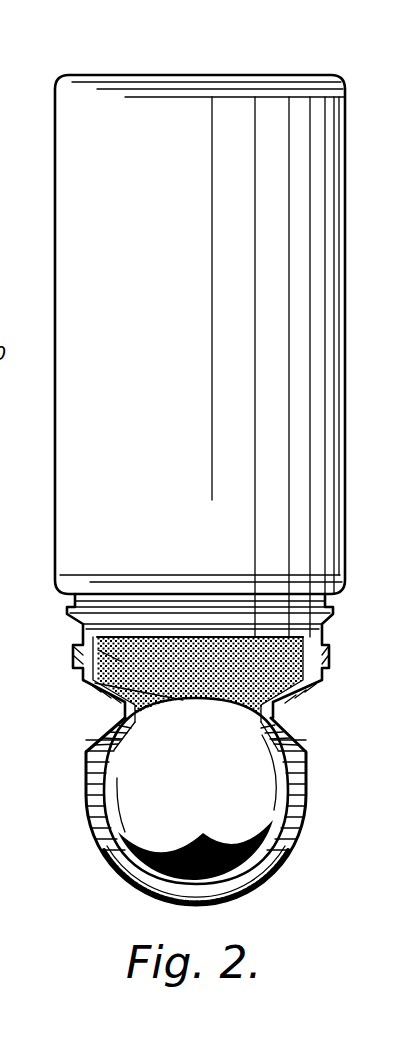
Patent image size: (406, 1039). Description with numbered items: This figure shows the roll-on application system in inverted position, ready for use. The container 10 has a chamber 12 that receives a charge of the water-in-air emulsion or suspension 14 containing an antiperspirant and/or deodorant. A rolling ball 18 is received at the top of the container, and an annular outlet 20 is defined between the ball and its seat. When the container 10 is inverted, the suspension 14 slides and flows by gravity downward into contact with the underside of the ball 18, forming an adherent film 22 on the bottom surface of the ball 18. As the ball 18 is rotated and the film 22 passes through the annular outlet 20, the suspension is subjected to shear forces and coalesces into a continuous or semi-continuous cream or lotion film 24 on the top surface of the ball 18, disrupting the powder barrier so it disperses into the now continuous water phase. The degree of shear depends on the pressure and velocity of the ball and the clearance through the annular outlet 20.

The container 10 is at (247, 75).
The chamber 12 is at (142, 336).
The charge of suspension 14 is at (92, 643).
The rolling ball 18 is at (110, 845).
The annular outlet 20 is at (284, 803).
The adherent film 22 is at (83, 680).
The cream or lotion film 24 is at (282, 856).